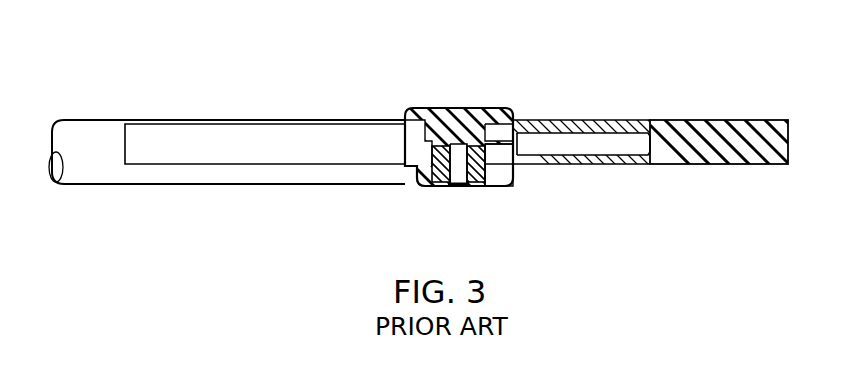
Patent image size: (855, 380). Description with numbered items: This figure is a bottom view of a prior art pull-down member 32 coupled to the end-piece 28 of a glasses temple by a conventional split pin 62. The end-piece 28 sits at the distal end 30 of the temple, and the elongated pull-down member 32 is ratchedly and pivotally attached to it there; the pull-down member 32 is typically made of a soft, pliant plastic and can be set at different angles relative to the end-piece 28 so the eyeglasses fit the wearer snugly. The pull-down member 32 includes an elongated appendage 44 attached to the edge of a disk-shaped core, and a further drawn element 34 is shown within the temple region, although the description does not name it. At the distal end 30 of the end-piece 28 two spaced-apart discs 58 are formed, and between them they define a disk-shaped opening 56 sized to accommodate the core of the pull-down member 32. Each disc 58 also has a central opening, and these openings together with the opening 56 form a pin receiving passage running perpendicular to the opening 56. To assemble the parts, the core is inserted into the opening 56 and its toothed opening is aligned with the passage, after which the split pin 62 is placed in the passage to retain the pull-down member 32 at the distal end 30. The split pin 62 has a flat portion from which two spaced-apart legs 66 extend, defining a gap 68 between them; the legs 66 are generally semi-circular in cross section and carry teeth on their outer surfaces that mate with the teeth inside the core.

The end-piece 28 is at (108, 168).
The distal end 30 is at (237, 120).
The pull-down member 32 is at (630, 103).
The inner member 34 is at (280, 145).
The elongated appendage 44 is at (729, 118).
The disk-shaped opening 56 is at (502, 170).
The discs 58 is at (516, 119).
The split pin 62 is at (440, 108).
The legs 66 is at (428, 170).
The gap 68 is at (457, 177).